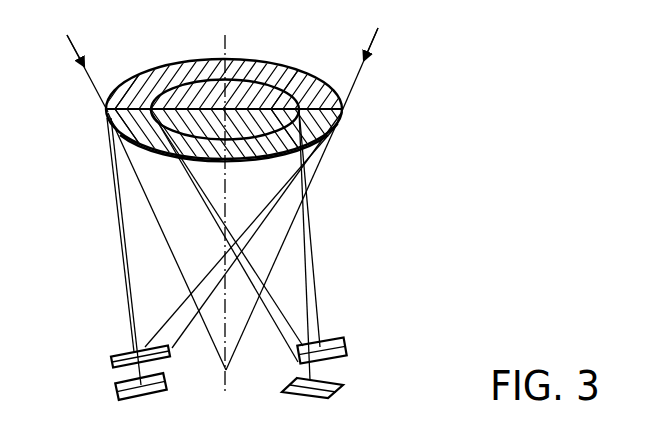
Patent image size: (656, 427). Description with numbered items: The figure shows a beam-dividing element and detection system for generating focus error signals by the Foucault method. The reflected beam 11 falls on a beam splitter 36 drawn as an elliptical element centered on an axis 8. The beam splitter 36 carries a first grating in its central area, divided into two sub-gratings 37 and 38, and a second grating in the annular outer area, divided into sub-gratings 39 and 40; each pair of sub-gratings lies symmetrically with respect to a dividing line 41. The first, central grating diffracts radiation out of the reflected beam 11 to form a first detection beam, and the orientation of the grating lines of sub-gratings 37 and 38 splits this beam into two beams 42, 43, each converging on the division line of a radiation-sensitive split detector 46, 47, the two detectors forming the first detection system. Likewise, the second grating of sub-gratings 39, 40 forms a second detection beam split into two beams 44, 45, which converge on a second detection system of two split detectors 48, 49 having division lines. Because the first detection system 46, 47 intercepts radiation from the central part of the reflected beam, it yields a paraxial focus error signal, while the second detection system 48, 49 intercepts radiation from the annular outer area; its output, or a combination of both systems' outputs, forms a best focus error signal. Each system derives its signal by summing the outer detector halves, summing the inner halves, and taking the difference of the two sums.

The optical axis 8 is at (228, 46).
The reflected beam 11 is at (73, 48).
The beam splitter 36 is at (408, 30).
The sub-grating 37 is at (287, 87).
The sub-grating 38 is at (318, 156).
The sub-grating 39 is at (336, 89).
The sub-grating 40 is at (336, 126).
The dividing line 41 is at (134, 92).
The beam 42 is at (315, 265).
The beam 43 is at (310, 280).
The beam 44 is at (123, 262).
The beam 45 is at (127, 285).
The radiation-sensitive split detector 46 is at (343, 342).
The radiation-sensitive split detector 47 is at (345, 385).
The radiation-sensitive split detector 48 is at (123, 345).
The radiation-sensitive split detector 49 is at (118, 387).